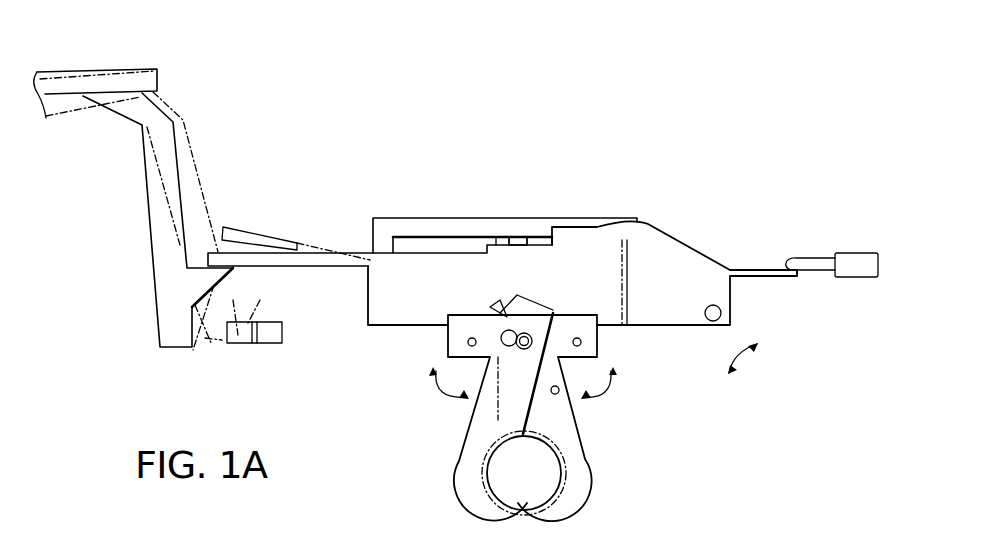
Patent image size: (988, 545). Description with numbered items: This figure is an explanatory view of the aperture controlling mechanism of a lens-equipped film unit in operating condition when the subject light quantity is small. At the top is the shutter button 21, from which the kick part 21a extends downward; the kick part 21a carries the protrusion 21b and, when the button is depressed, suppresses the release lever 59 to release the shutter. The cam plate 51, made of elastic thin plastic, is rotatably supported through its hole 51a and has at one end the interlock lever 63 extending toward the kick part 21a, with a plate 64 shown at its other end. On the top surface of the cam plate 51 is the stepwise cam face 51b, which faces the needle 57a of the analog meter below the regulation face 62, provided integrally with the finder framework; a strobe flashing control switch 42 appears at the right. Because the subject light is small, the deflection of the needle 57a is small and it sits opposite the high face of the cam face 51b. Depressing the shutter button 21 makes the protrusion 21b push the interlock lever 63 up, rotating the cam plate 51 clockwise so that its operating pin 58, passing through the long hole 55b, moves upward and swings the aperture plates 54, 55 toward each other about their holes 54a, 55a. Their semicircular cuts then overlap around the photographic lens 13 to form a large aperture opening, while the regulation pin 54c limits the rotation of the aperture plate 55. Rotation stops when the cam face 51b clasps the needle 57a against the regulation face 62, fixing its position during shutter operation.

The shutter button 21 is at (84, 67).
The kick part 21a is at (150, 251).
The protrusion 21b is at (193, 315).
The interlock lever 63 is at (297, 243).
The release lever 59 is at (243, 326).
The regulation face 62 is at (402, 218).
The cam face 51b is at (495, 238).
The needle 57a is at (520, 238).
The cam plate 51 is at (668, 226).
The plate 64 is at (758, 269).
The strobe flashing control switch 42 is at (858, 248).
The long hole 55b is at (500, 335).
The operating pin 58 is at (524, 330).
The hole 51a is at (722, 313).
The hole 55a is at (466, 342).
The hole 54a is at (583, 342).
The regulation pin 54c is at (561, 389).
The photographic lens 13 is at (583, 456).
The aperture plate 55 is at (478, 522).
The aperture plate 54 is at (570, 522).